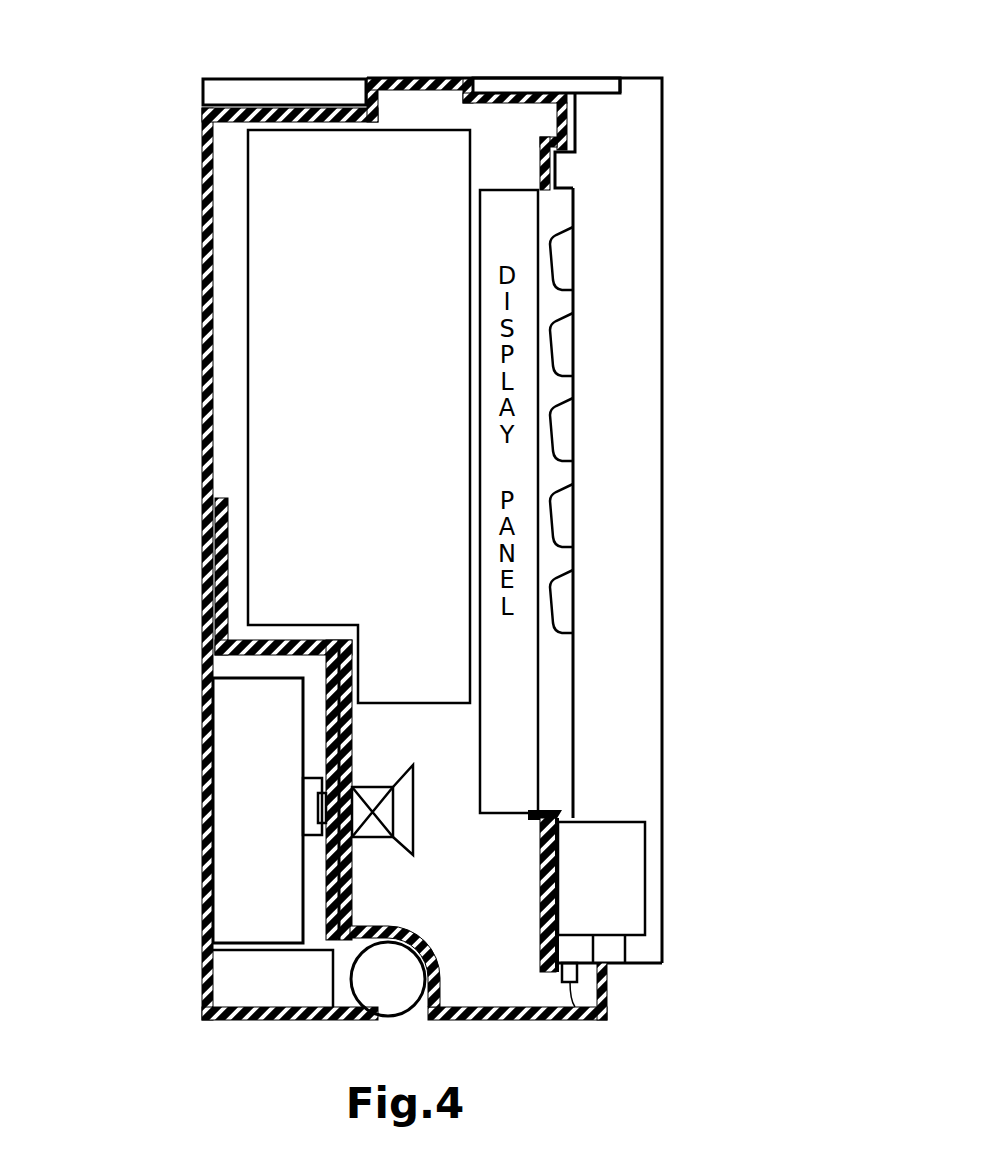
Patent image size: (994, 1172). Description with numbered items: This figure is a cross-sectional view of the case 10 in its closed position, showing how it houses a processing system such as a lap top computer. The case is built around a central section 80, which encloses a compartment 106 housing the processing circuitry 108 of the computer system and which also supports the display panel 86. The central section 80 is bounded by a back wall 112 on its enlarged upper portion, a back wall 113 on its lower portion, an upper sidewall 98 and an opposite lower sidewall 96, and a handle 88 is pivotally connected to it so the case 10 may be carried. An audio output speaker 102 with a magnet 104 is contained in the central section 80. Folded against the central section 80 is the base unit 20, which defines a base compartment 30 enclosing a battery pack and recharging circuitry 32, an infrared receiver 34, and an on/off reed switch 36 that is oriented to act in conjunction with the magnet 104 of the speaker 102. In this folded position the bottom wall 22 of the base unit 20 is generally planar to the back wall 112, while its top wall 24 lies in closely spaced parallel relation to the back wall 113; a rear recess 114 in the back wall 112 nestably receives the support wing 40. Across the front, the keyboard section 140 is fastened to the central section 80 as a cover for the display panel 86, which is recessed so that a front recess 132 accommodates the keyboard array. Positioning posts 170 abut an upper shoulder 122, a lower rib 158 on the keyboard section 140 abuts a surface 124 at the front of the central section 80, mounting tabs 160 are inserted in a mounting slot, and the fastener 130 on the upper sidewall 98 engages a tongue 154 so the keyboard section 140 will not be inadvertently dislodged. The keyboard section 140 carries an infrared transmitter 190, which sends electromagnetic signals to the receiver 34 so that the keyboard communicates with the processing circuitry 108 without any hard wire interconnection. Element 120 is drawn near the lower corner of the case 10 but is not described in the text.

The case 10 is at (716, 493).
The base unit 20 is at (148, 792).
The bottom wall 22 is at (203, 722).
The top wall 24 is at (352, 870).
The base compartment 30 is at (298, 884).
The battery pack and recharging circuitry 32 is at (232, 692).
The infrared receiver 34 is at (268, 1008).
The on/off reed switch 36 is at (305, 825).
The support wing 40 is at (215, 530).
The central section 80 is at (160, 162).
The display panel 86 is at (527, 217).
The handle 88 is at (205, 78).
The lower sidewall 96 is at (490, 1020).
The upper sidewall 98 is at (416, 77).
The audio output speaker 102 is at (434, 824).
The magnet 104 is at (367, 787).
The compartment 106 is at (483, 128).
The processing circuitry 108 is at (250, 295).
The back wall 112 is at (202, 215).
The back wall 113 is at (352, 900).
The rear recess 114 is at (215, 585).
The bottom corner wall 120 is at (607, 990).
The upper shoulder 122 is at (577, 128).
The surface 124 is at (546, 812).
The fastener 130 is at (590, 79).
The front recess 132 is at (582, 682).
The keyboard section 140 is at (698, 319).
The tongue 154 is at (620, 92).
The lower rib 158 is at (551, 830).
The mounting tab 160 is at (577, 1020).
The positioning post 170 is at (566, 170).
The infrared transmitter 190 is at (637, 844).